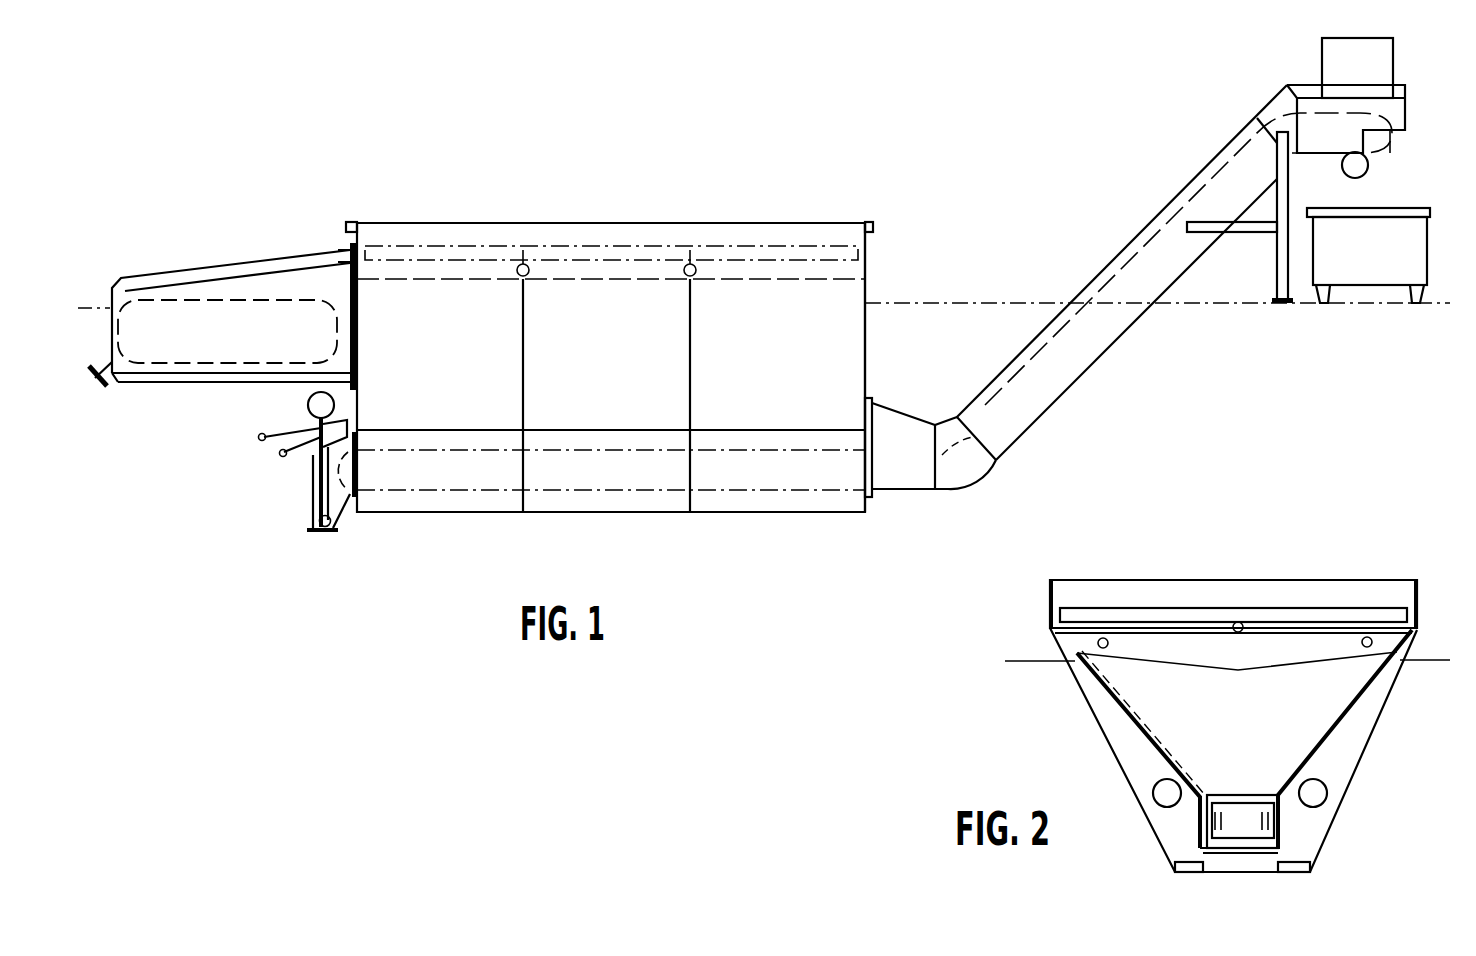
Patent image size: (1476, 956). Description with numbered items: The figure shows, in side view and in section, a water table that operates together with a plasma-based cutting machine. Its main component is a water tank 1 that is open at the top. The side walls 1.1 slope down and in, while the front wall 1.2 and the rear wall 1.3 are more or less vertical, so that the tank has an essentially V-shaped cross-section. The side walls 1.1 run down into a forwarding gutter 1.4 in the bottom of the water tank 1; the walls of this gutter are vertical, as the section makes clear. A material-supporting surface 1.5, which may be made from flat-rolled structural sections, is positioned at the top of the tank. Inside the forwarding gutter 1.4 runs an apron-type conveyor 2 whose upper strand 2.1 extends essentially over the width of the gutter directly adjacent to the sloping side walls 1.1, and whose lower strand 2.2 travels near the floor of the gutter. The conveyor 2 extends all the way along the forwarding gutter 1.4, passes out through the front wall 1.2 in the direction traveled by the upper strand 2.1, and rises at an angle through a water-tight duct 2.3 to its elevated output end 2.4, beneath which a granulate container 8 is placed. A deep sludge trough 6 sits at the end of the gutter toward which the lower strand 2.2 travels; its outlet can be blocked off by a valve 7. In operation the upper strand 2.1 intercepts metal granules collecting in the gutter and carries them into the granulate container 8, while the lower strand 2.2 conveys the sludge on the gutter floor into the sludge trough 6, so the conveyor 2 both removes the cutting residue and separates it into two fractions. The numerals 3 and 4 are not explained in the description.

In FIG. 1, the water tank 1 is at (737, 222).
In FIG. 2, the water tank 1 is at (1118, 589).
In FIG. 2, the side walls 1.1 is at (1148, 736).
In FIG. 1, the front wall 1.2 is at (867, 331).
In FIG. 1, the rear wall 1.3 is at (357, 298).
In FIG. 1, the forwarding gutter 1.4 is at (798, 503).
In FIG. 2, the forwarding gutter 1.4 is at (1222, 862).
In FIG. 1, the material-supporting surface 1.5 is at (465, 252).
In FIG. 2, the material-supporting surface 1.5 is at (1208, 612).
In FIG. 1, the apron-type conveyor 2 is at (752, 467).
In FIG. 1, the upper strand 2.1 is at (577, 451).
In FIG. 2, the upper strand 2.1 is at (1243, 800).
In FIG. 1, the lower strand 2.2 is at (600, 491).
In FIG. 2, the lower strand 2.2 is at (1255, 853).
In FIG. 1, the water-tight duct 2.3 is at (1064, 388).
In FIG. 1, the output end 2.4 is at (1405, 117).
In FIG. 1, the feed hopper 3 is at (222, 281).
In FIG. 1, the feed opening 4 is at (202, 358).
In FIG. 1, the sludge trough 6 is at (357, 498).
In FIG. 1, the valve 7 is at (313, 492).
In FIG. 1, the granulate container 8 is at (1413, 257).